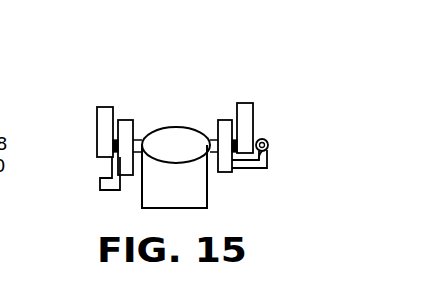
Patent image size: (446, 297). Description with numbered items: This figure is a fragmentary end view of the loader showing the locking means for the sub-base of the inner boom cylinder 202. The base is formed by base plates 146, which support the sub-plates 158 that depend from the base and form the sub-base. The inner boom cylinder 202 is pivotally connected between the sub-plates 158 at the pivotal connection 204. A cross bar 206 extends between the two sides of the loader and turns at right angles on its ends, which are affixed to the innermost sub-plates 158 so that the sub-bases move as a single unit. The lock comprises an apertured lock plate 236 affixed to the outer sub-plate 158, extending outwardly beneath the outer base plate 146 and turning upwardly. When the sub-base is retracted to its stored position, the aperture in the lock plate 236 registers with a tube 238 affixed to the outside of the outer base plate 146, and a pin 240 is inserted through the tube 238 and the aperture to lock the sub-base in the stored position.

The base plates 146 is at (97, 112).
The sub-plates 158 is at (131, 119).
The inner boom cylinder 202 is at (160, 192).
The pivotal connection 204 is at (137, 124).
The cross bar 206 is at (99, 176).
The apertured lock plate 236 is at (252, 170).
The tube 238 is at (277, 130).
The pin 240 is at (268, 160).